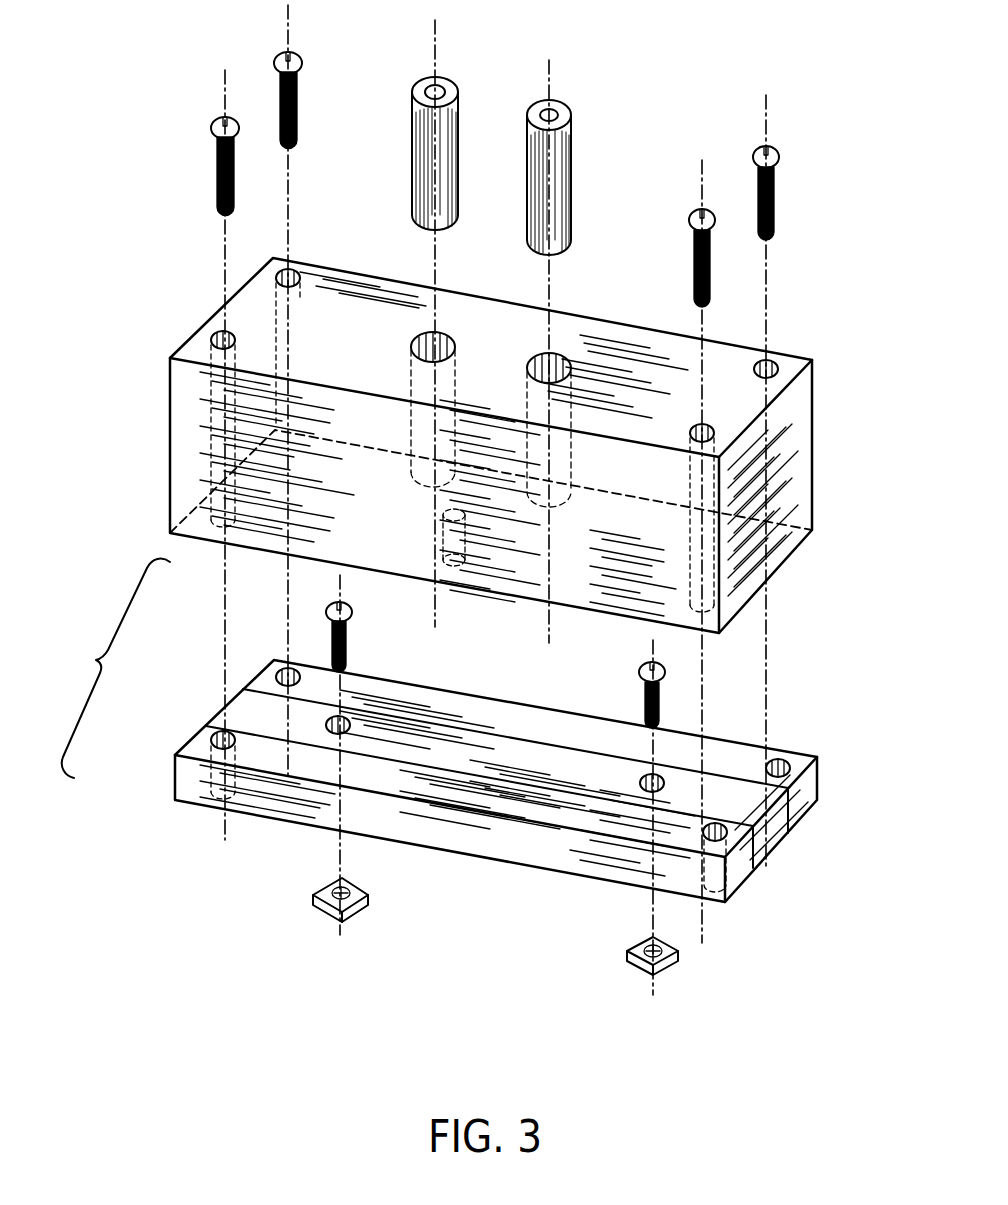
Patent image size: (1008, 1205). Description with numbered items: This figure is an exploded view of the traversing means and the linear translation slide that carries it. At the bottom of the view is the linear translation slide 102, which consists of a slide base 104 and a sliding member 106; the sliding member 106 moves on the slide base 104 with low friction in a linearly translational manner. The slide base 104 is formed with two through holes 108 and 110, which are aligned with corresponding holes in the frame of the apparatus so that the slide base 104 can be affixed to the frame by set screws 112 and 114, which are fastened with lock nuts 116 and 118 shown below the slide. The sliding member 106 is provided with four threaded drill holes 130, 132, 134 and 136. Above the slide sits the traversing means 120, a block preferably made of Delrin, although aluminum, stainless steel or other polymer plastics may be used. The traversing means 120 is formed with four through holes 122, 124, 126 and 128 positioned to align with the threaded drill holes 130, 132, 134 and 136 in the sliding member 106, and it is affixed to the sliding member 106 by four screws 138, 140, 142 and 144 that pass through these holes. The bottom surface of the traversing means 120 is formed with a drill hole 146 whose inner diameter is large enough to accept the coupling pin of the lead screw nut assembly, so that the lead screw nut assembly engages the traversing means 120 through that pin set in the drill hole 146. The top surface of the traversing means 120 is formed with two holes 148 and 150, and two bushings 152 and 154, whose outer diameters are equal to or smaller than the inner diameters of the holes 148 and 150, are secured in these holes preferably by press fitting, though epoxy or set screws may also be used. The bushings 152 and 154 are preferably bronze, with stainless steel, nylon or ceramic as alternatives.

The linear translation slide 102 is at (108, 668).
The slide base 104 is at (763, 848).
The sliding member 106 is at (807, 793).
The through hole 108 is at (637, 783).
The through hole 110 is at (357, 725).
The set screw 112 is at (660, 690).
The set screw 114 is at (348, 643).
The lock nut 116 is at (638, 968).
The lock nut 118 is at (357, 912).
The traversing means 120 is at (813, 470).
The through hole 122 is at (778, 367).
The through hole 124 is at (713, 433).
The through hole 126 is at (277, 278).
The through hole 128 is at (213, 340).
The threaded drill hole 130 is at (782, 762).
The threaded drill hole 132 is at (703, 832).
The threaded drill hole 134 is at (278, 677).
The threaded drill hole 136 is at (213, 740).
The screw 138 is at (773, 177).
The screw 140 is at (695, 247).
The screw 142 is at (296, 97).
The screw 144 is at (217, 173).
The drill hole 146 is at (458, 568).
The hole 148 is at (572, 370).
The hole 150 is at (455, 342).
The bushing 152 is at (572, 132).
The bushing 154 is at (455, 95).